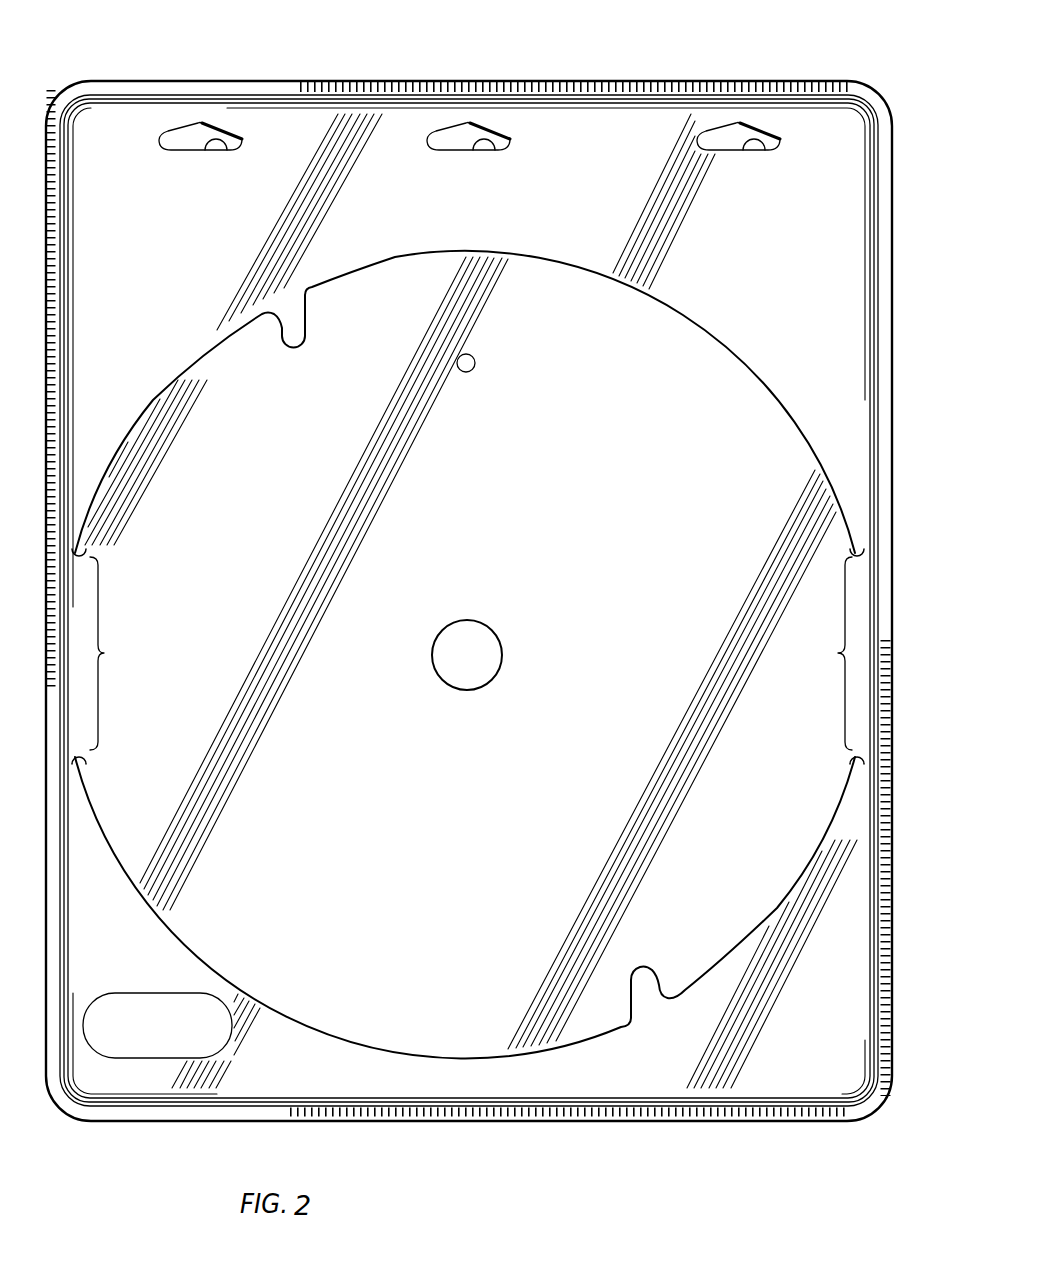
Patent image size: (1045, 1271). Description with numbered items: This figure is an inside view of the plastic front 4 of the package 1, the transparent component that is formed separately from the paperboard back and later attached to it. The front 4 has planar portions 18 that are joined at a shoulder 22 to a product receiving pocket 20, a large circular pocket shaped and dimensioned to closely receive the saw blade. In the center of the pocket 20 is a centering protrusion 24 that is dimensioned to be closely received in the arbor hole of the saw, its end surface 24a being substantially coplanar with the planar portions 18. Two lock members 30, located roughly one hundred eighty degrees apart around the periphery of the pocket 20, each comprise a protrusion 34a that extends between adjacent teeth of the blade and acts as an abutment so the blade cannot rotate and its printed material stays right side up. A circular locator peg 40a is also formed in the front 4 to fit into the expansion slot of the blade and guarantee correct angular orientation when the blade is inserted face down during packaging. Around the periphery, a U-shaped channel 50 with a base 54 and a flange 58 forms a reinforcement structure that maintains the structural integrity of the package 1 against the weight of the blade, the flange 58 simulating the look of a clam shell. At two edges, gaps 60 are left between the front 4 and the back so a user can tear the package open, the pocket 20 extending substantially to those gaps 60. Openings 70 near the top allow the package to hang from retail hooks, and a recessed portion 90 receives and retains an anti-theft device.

The package 1 is at (902, 105).
The plastic front 4 is at (746, 81).
The planar portions 18 is at (858, 807).
The product receiving pocket 20 is at (682, 402).
The shoulder 22 is at (760, 926).
The centering protrusion 24 is at (443, 631).
The end surface 24a is at (484, 630).
The lock member 30 is at (293, 347).
The protrusion 34a is at (285, 327).
The locator peg 40a is at (476, 358).
The U-shaped channel 50 is at (873, 1015).
The base 54 is at (758, 1100).
The flange 58 is at (575, 1121).
The gaps 60 is at (471, 653).
The openings 70 is at (223, 145).
The recessed portion 90 is at (153, 998).